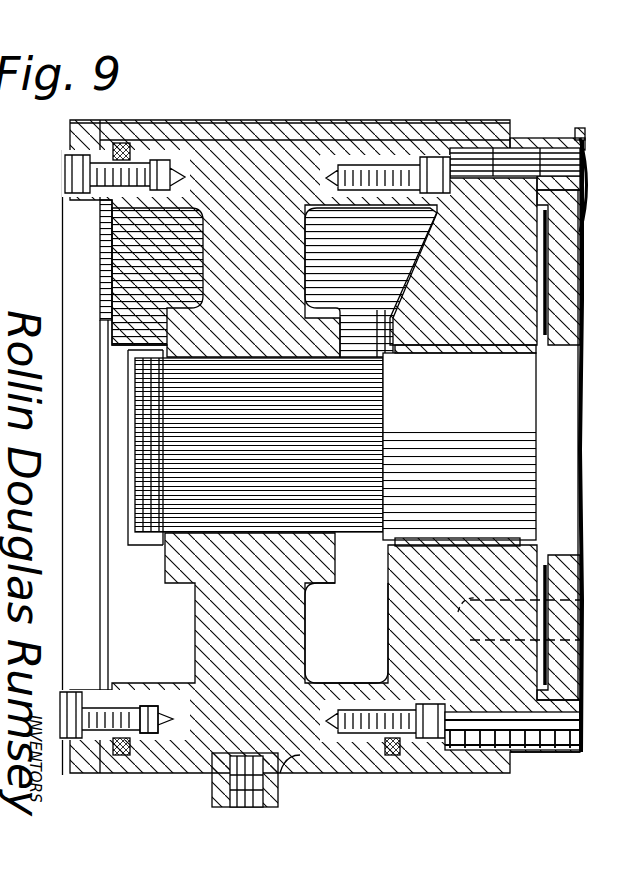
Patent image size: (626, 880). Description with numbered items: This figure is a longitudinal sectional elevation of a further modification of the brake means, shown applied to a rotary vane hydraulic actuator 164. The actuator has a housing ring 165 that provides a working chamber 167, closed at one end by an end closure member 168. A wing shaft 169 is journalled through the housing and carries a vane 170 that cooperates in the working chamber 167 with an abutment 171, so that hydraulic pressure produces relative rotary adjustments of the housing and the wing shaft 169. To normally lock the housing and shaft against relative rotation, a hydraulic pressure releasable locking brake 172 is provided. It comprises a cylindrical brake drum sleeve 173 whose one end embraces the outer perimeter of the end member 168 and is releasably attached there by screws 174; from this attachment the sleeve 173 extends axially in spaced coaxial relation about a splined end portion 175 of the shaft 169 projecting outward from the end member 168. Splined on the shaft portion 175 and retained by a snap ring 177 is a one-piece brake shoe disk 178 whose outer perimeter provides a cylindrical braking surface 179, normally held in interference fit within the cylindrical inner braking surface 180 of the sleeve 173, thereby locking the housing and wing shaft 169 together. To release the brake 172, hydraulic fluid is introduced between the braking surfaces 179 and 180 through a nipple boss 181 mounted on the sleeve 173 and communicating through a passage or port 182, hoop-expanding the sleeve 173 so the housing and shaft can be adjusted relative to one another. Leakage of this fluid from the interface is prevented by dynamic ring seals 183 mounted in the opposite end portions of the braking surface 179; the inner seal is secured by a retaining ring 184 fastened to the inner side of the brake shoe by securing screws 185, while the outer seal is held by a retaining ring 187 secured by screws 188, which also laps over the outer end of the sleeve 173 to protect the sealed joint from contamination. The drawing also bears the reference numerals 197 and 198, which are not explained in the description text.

The rotary vane hydraulic actuator 164 is at (568, 406).
The housing ring 165 is at (599, 162).
The working chamber 167 is at (548, 208).
The end closure member 168 is at (522, 140).
The wing shaft 169 is at (574, 411).
The vane 170 is at (570, 302).
The abutment 171 is at (567, 596).
The hydraulic pressure releasable locking brake 172 is at (303, 108).
The brake drum sleeve 173 is at (390, 103).
The screws 174 is at (481, 773).
The splined end portion 175 is at (112, 362).
The snap ring 177 is at (160, 547).
The brake shoe disk 178 is at (210, 270).
The cylindrical braking surface 179 is at (203, 140).
The cylindrical inner braking surface 180 is at (268, 140).
The nipple boss 181 is at (213, 792).
The passage or port 182 is at (290, 772).
The dynamic ring seals 183 is at (117, 752).
The retaining ring 184 is at (410, 738).
The securing screws 185 is at (423, 705).
The retaining ring 187 is at (100, 667).
The screws 188 is at (62, 170).
The ring 197 is at (604, 718).
The ring 198 is at (568, 770).